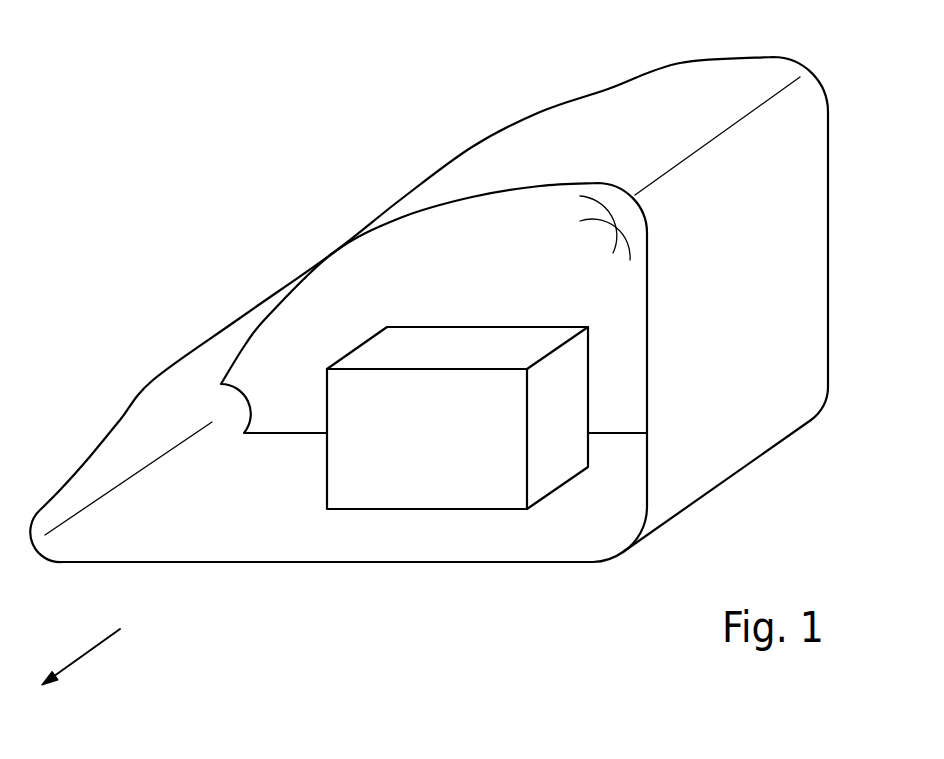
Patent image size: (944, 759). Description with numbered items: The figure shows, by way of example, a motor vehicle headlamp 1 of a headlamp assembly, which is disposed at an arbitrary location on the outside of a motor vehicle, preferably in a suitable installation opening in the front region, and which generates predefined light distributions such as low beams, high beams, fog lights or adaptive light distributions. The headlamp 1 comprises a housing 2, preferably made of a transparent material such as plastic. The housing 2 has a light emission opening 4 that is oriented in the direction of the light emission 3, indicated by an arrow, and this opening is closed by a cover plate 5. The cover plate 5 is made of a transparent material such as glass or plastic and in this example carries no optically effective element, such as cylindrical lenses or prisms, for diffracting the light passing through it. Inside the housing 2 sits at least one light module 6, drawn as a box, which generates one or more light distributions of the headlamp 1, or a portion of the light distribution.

The motor vehicle headlamp 1 is at (244, 214).
The housing 2 is at (800, 285).
The direction of the light emission 3 is at (92, 652).
The light emission opening 4 is at (224, 561).
The cover plate 5 is at (620, 217).
The light module 6 is at (447, 443).